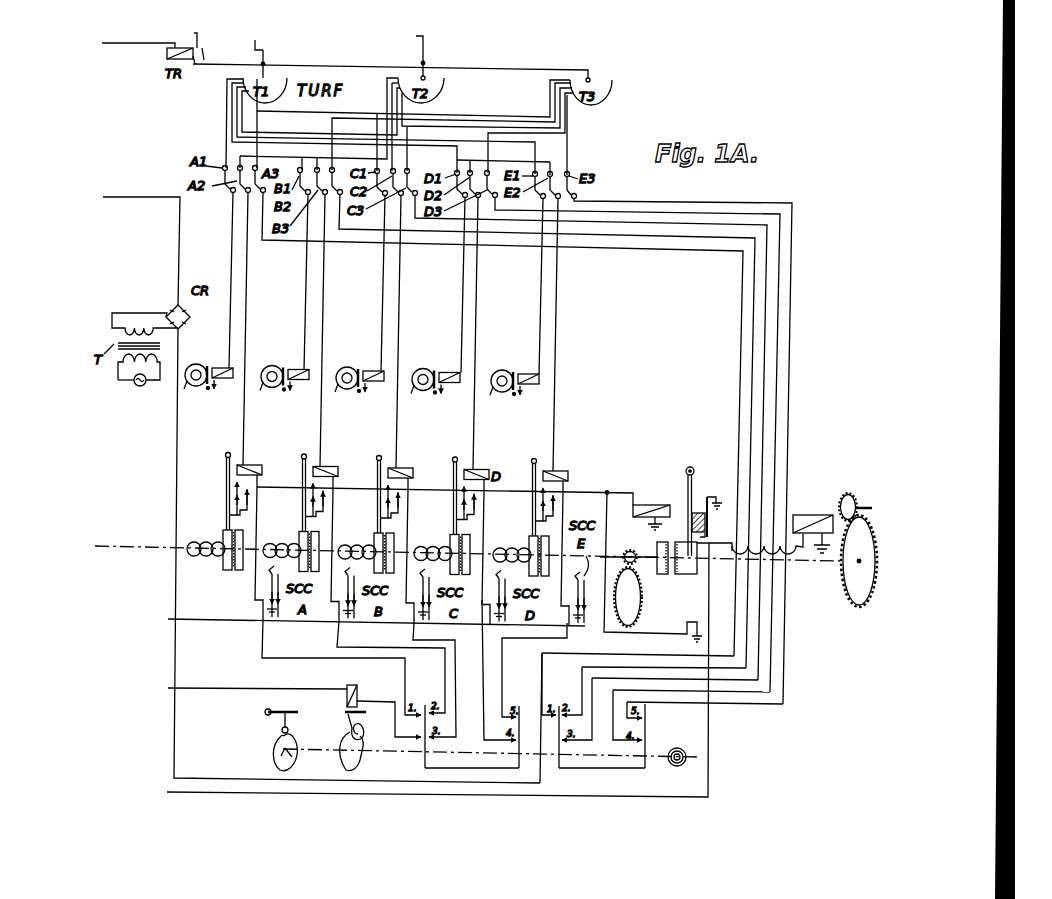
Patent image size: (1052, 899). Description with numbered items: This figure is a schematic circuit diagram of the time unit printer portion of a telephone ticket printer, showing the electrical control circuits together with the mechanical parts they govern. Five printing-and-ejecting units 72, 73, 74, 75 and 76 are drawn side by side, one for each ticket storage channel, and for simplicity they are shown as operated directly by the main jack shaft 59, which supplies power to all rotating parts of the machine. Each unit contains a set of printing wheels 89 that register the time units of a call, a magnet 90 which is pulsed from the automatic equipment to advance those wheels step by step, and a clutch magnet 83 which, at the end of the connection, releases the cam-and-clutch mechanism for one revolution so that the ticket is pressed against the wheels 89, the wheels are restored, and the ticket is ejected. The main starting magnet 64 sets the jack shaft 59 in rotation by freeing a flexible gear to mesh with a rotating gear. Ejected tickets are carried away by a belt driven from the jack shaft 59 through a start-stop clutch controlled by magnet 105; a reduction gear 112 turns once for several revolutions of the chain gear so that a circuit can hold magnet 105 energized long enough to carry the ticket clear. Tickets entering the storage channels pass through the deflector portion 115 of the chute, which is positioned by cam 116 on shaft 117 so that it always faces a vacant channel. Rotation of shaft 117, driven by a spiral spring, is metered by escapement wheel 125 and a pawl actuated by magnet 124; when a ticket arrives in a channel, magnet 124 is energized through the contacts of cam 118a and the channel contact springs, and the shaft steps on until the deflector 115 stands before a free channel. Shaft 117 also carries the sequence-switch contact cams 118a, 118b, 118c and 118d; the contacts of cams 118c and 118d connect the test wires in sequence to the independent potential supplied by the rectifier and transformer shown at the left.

The main jack shaft 59 is at (138, 546).
The main starting magnet 64 is at (820, 513).
The printing-and-ejecting unit 72 is at (232, 522).
The printing-and-ejecting unit 73 is at (308, 525).
The printing-and-ejecting unit 74 is at (383, 526).
The printing-and-ejecting unit 75 is at (459, 528).
The printing-and-ejecting unit 76 is at (538, 529).
The clutch magnet 83 is at (250, 470).
The printing wheels 89 is at (349, 387).
The magnet 90 is at (227, 380).
The clutch magnet 105 is at (661, 504).
The gear 112 is at (634, 604).
The deflector portion 115 is at (292, 715).
The cam 116 is at (289, 759).
The shaft 117 is at (653, 755).
The contact cam 118a is at (425, 743).
The contact cam 118b is at (520, 747).
The contact cam 118c is at (562, 747).
The contact cam 118d is at (645, 742).
The magnet 124 is at (320, 668).
The escapement wheel 125 is at (352, 760).